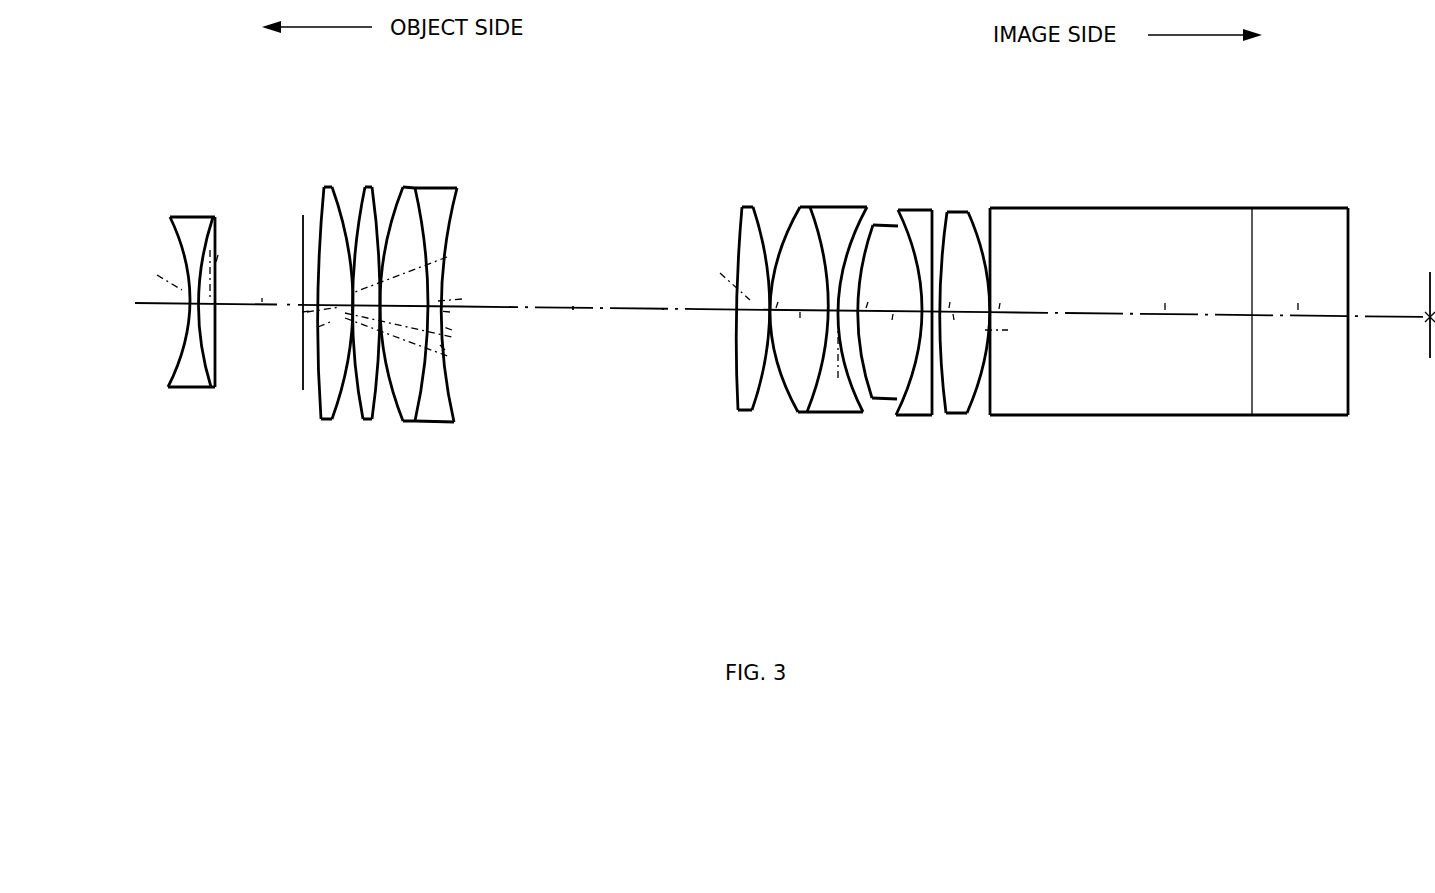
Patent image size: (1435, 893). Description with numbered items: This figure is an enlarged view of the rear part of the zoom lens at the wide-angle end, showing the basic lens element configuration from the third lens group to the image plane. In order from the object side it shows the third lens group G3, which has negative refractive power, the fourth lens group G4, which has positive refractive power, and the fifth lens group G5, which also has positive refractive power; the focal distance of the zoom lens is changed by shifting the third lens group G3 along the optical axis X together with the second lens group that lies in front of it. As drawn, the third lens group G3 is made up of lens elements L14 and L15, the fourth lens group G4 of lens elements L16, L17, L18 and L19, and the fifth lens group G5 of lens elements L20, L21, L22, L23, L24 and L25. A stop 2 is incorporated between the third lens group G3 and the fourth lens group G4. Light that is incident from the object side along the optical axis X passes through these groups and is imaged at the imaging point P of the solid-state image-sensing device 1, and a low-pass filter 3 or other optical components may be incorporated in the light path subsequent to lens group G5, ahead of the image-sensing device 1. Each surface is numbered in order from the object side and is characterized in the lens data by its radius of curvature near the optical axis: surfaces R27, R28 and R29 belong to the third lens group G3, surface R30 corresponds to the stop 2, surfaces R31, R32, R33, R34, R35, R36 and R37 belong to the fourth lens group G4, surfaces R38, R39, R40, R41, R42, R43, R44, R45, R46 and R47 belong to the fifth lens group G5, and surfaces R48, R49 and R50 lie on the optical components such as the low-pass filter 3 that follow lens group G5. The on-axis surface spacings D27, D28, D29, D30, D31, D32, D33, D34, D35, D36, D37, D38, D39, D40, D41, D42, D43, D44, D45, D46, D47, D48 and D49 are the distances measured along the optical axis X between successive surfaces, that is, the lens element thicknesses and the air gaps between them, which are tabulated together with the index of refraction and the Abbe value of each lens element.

The solid-state image-sensing device 1 is at (1428, 294).
The stop 2 is at (278, 319).
The low-pass filter 3 is at (1194, 309).
The imaging point P is at (1426, 332).
The optical axis X is at (663, 314).
The third lens group G3 is at (229, 162).
The fourth lens group G4 is at (460, 137).
The fifth lens group G5 is at (987, 150).
The lens element L14 is at (159, 306).
The lens element L15 is at (242, 288).
The lens element L16 is at (309, 302).
The lens element L17 is at (387, 320).
The lens element L18 is at (418, 318).
The lens element L19 is at (468, 291).
The lens element L20 is at (744, 304).
The lens element L21 is at (815, 311).
The lens element L22 is at (852, 318).
The lens element L23 is at (888, 279).
The lens element L24 is at (935, 302).
The lens element L25 is at (980, 325).
The lens element surface R27 is at (172, 366).
The lens element surface R28 is at (204, 360).
The lens element surface R29 is at (216, 350).
The stop surface R30 is at (303, 228).
The lens element surface R31 is at (317, 398).
The lens element surface R32 is at (337, 421).
The lens element surface R33 is at (366, 421).
The lens element surface R34 is at (397, 424).
The lens element surface R35 is at (418, 424).
The lens element surface R36 is at (431, 423).
The lens element surface R37 is at (452, 402).
The lens element surface R38 is at (737, 394).
The lens element surface R39 is at (760, 397).
The lens element surface R40 is at (786, 398).
The lens element surface R41 is at (818, 406).
The lens element surface R42 is at (862, 396).
The lens element surface R43 is at (864, 243).
The lens element surface R44 is at (906, 224).
The lens element surface R45 is at (931, 398).
The lens element surface R46 is at (936, 410).
The lens element surface R47 is at (974, 407).
The optical component surface R48 is at (990, 386).
The optical component surface R49 is at (1246, 416).
The optical component surface R50 is at (1350, 416).
The on-axis surface spacing D27 is at (184, 293).
The on-axis surface spacing D28 is at (218, 255).
The on-axis surface spacing D29 is at (262, 298).
The on-axis surface spacing D30 is at (302, 312).
The on-axis surface spacing D31 is at (318, 327).
The on-axis surface spacing D32 is at (447, 257).
The on-axis surface spacing D33 is at (445, 350).
The on-axis surface spacing D34 is at (452, 330).
The on-axis surface spacing D35 is at (450, 312).
The on-axis surface spacing D36 is at (462, 276).
The on-axis surface spacing D37 is at (573, 302).
The on-axis surface spacing D38 is at (745, 301).
The on-axis surface spacing D39 is at (778, 302).
The on-axis surface spacing D40 is at (800, 318).
The on-axis surface spacing D41 is at (838, 378).
The on-axis surface spacing D42 is at (868, 302).
The on-axis surface spacing D43 is at (892, 320).
The on-axis surface spacing D44 is at (954, 320).
The on-axis surface spacing D45 is at (950, 302).
The on-axis surface spacing D46 is at (1008, 330).
The on-axis surface spacing D47 is at (1000, 303).
The on-axis surface spacing D48 is at (1165, 303).
The on-axis surface spacing D49 is at (1298, 303).